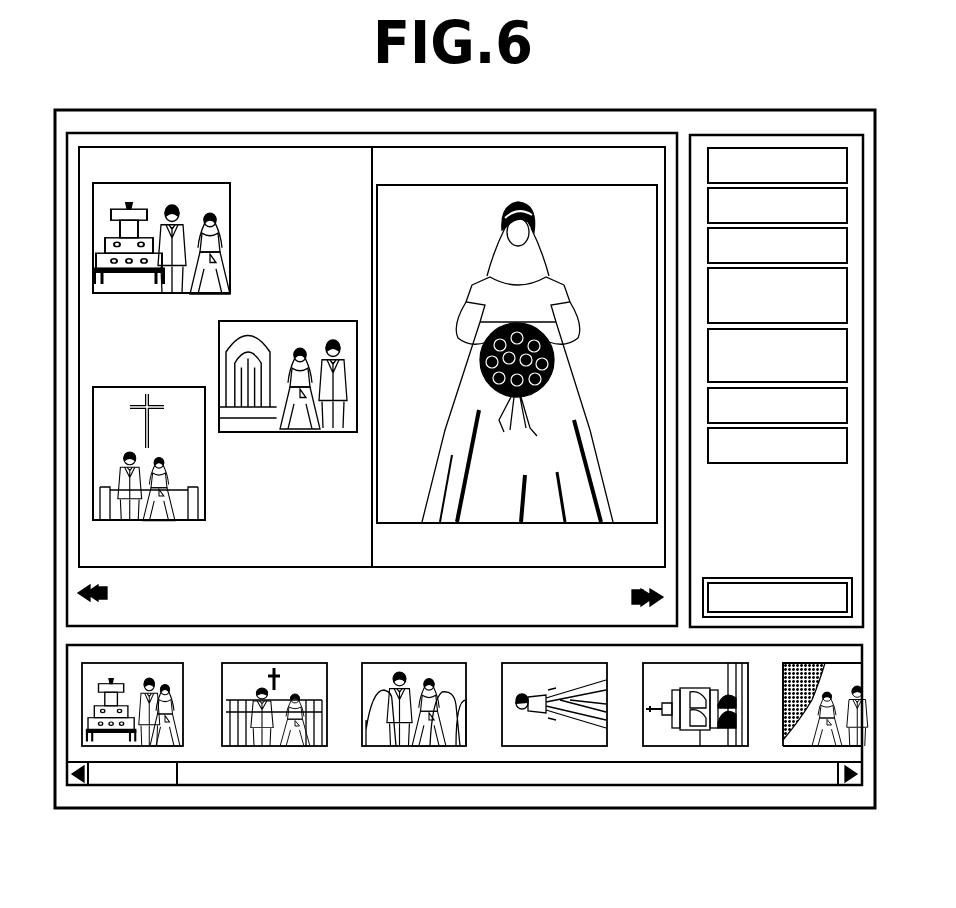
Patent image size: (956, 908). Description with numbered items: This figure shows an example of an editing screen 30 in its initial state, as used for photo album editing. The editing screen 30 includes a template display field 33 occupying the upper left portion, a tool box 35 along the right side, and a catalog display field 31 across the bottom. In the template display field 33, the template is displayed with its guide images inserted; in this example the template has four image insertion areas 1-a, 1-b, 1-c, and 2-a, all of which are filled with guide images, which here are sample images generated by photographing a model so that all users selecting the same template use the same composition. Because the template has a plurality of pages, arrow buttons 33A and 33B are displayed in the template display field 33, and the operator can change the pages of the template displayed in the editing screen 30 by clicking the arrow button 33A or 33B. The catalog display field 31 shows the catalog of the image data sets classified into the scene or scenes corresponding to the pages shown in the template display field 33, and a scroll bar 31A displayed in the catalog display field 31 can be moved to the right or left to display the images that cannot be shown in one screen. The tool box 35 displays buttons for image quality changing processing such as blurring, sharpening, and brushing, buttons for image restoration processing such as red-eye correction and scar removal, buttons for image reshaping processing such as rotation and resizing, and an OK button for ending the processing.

The editing screen 30 is at (777, 112).
The catalog display field 31 is at (767, 748).
The scroll bar 31A is at (237, 770).
The template display field 33 is at (90, 142).
The arrow button 33A is at (643, 590).
The arrow button 33B is at (100, 587).
The tool box 35 is at (807, 147).
The image insertion area 1-a is at (232, 208).
The image insertion area 1-b is at (270, 320).
The image insertion area 1-c is at (207, 493).
The image insertion area 2-a is at (482, 183).